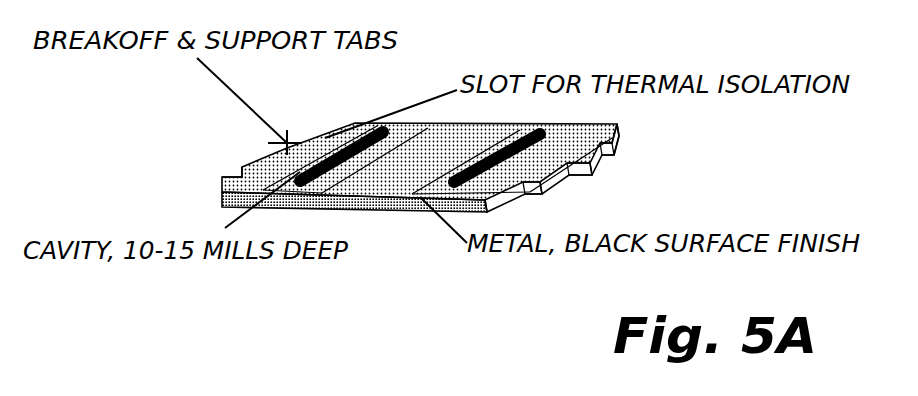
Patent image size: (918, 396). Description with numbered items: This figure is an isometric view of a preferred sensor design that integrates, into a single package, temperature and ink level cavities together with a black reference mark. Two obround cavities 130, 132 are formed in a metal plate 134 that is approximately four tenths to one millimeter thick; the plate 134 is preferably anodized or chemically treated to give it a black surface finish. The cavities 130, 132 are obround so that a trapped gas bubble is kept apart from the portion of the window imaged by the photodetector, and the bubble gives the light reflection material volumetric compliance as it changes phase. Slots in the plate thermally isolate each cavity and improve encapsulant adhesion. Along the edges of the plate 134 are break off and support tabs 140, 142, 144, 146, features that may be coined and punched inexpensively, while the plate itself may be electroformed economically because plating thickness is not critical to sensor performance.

The obround cavity 130 is at (372, 118).
The obround cavity 132 is at (528, 105).
The metal plate 134 is at (608, 140).
The break off and support tab 140 is at (288, 128).
The break off and support tab 142 is at (233, 181).
The break off and support tab 144 is at (590, 170).
The break off and support tab 146 is at (546, 188).